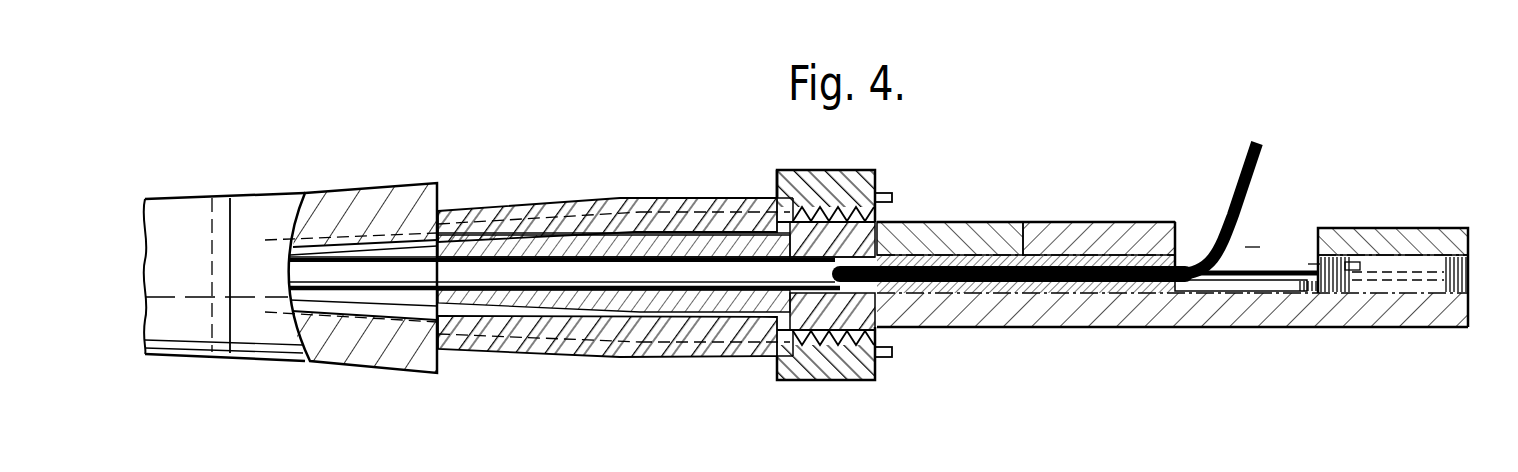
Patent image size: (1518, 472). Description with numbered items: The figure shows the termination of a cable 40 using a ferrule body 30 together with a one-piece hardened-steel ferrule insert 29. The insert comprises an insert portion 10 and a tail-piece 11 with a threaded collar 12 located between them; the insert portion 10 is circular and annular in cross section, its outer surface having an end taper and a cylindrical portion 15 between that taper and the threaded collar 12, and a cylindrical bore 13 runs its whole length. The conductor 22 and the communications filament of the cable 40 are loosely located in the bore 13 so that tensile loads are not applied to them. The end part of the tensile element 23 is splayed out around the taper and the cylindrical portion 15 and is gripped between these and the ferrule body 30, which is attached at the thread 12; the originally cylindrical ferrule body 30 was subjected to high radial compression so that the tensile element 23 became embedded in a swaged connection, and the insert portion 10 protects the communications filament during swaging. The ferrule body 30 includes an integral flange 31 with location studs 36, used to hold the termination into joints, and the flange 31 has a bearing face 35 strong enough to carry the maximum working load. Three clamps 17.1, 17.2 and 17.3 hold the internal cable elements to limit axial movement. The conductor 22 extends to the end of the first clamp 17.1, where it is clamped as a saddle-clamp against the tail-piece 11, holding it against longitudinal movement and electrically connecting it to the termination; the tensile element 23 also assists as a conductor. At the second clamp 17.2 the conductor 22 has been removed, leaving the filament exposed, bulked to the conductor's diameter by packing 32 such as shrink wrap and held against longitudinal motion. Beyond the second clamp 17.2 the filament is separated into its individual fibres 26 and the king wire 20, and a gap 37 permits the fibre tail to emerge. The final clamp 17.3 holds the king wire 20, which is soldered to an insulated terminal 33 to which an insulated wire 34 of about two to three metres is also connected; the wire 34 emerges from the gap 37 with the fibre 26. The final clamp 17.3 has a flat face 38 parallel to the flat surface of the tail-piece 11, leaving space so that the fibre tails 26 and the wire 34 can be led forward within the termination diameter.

The insert portion 10 is at (635, 240).
The tail-piece 11 is at (1447, 173).
The threaded collar 12 is at (877, 371).
The cylindrical bore 13 is at (557, 292).
The cylindrical portion 15 is at (699, 233).
The first clamp 17.1 is at (950, 222).
The second clamp 17.2 is at (1089, 222).
The final clamp 17.3 is at (1353, 229).
The king wire 20 is at (1273, 288).
The conductor 22 is at (712, 325).
The tensile element 23 is at (393, 366).
The fibre 26 is at (1241, 150).
The ferrule insert 29 is at (995, 347).
The ferrule body 30 is at (615, 357).
The integral flange 31 is at (836, 178).
The packing 32 is at (1117, 290).
The terminal 33 is at (1400, 285).
The insulated wire 34 is at (1318, 264).
The bearing face 35 is at (777, 190).
The location studs 36 is at (893, 194).
The gap 37 is at (1252, 247).
The flat face 38 is at (1442, 237).
The cable 40 is at (190, 327).